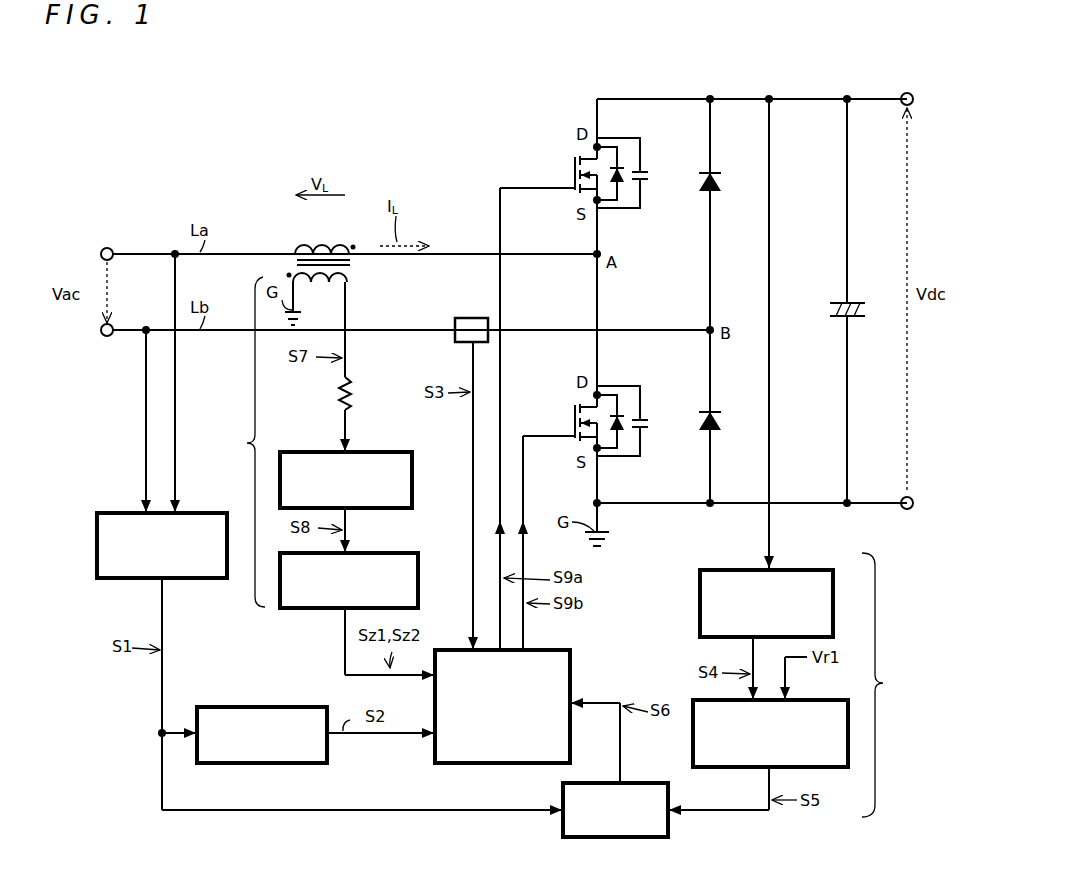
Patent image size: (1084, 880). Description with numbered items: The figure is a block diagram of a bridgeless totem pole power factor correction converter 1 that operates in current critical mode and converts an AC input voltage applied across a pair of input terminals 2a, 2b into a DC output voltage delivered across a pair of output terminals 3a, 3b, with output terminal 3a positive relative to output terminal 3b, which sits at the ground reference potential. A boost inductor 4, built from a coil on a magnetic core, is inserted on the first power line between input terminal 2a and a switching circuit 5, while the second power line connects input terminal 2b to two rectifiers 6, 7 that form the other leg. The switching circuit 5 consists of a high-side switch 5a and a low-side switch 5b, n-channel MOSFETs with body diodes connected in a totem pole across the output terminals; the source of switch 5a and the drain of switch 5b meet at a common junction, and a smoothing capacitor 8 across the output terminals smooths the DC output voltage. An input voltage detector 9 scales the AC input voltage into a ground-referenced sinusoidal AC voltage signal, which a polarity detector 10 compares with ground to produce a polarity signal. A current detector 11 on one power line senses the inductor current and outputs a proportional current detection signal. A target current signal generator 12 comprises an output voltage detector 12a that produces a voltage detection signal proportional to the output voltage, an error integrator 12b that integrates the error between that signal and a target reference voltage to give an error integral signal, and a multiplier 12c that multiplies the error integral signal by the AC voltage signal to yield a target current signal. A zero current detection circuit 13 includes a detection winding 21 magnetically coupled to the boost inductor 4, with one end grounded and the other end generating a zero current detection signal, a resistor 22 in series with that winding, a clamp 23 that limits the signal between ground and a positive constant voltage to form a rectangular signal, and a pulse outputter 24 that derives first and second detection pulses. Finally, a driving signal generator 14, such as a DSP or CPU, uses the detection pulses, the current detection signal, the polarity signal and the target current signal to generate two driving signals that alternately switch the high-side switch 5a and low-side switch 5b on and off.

The converter 1 is at (357, 89).
The input terminal 2a is at (107, 247).
The input terminal 2b is at (107, 337).
The output terminal 3a is at (906, 92).
The output terminal 3b is at (907, 510).
The boost inductor 4 is at (315, 245).
The switching circuit 5 is at (638, 91).
The high-side switch 5a is at (572, 173).
The low-side switch 5b is at (572, 421).
The rectifier 6 is at (713, 172).
The rectifier 7 is at (713, 410).
The smoothing capacitor 8 is at (851, 300).
The input voltage detector 9 is at (190, 513).
The polarity detector 10 is at (302, 707).
The current detector 11 is at (467, 316).
The target current signal generator 12 is at (736, 693).
The output voltage detector 12a is at (792, 570).
The error integrator 12b is at (797, 700).
The multiplier 12c is at (628, 783).
The zero current detection circuit 13 is at (242, 442).
The driving signal generator 14 is at (553, 650).
The detection winding 21 is at (350, 282).
The resistor 22 is at (350, 392).
The clamp 23 is at (392, 452).
The pulse outputter 24 is at (388, 553).